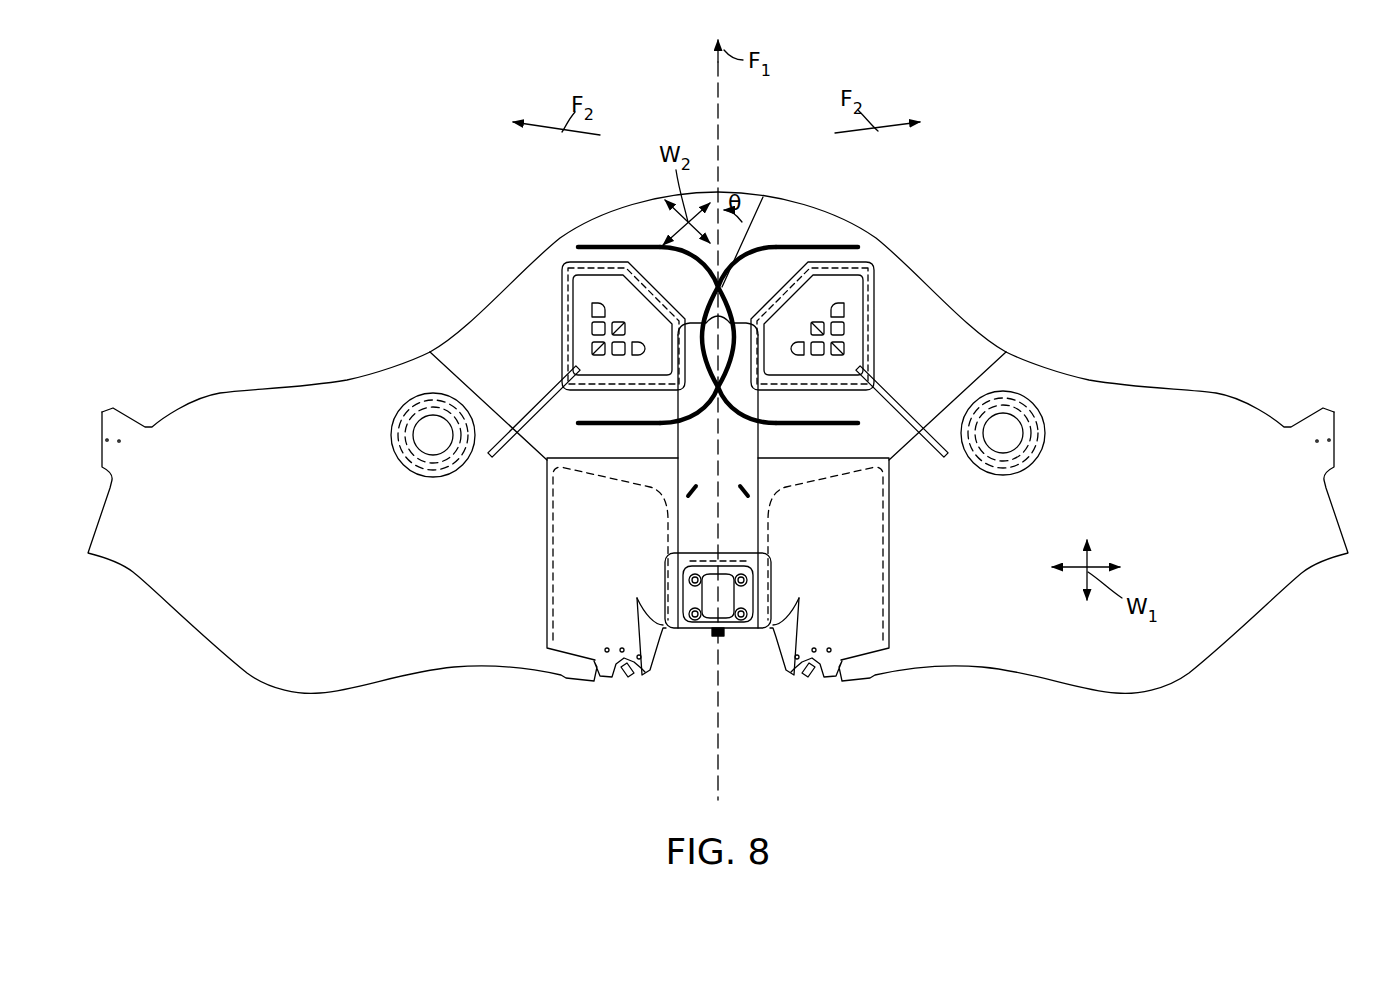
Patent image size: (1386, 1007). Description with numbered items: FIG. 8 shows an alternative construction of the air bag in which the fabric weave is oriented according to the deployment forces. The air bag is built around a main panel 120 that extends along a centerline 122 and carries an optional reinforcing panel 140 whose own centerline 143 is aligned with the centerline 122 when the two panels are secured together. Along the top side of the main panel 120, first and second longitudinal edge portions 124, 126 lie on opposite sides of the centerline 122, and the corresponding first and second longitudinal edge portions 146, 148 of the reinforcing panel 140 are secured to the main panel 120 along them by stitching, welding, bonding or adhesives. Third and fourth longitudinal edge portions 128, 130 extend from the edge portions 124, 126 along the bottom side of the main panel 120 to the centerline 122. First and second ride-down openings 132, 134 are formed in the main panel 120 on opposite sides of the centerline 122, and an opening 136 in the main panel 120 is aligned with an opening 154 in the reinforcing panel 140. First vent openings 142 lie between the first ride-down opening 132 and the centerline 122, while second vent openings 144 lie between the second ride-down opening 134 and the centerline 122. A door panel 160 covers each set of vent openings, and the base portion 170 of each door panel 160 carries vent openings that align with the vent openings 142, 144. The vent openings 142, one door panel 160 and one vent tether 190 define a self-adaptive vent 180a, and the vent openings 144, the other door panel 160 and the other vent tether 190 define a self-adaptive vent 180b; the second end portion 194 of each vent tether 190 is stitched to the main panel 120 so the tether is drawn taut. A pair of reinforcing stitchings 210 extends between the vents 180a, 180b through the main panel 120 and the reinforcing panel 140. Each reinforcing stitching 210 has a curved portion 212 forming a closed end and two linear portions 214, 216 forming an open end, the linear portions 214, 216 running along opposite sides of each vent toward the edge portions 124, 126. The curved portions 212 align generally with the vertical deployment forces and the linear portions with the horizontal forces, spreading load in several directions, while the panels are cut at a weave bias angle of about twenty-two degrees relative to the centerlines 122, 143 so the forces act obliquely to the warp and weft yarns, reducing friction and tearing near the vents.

The main panel 120 is at (718, 461).
The centerline 122 is at (770, 420).
The centerline 143 is at (723, 96).
The first longitudinal edge portion 124 is at (558, 272).
The first longitudinal edge portion 146 is at (500, 300).
The second longitudinal edge portion 126 is at (897, 272).
The second longitudinal edge portion 148 is at (897, 272).
The third longitudinal edge portion 128 is at (386, 684).
The fourth longitudinal edge portion 130 is at (985, 671).
The first ride-down opening 132 is at (438, 434).
The second ride-down opening 134 is at (999, 433).
The opening 136 is at (736, 635).
The opening 154 is at (728, 650).
The reinforcing panel 140 is at (737, 272).
The first vent openings 142 is at (544, 286).
The second vent openings 144 is at (841, 295).
The base portion 170 is at (589, 297).
The door panel 160 is at (691, 249).
The self-adaptive vent 180a is at (613, 250).
The self-adaptive vent 180b is at (872, 258).
The vent tether 190 is at (716, 447).
The second end portion 194 is at (497, 472).
The reinforcing stitching 210 is at (714, 333).
The curved portion 212 is at (708, 297).
The linear portion 214 is at (660, 247).
The linear portion 216 is at (605, 430).